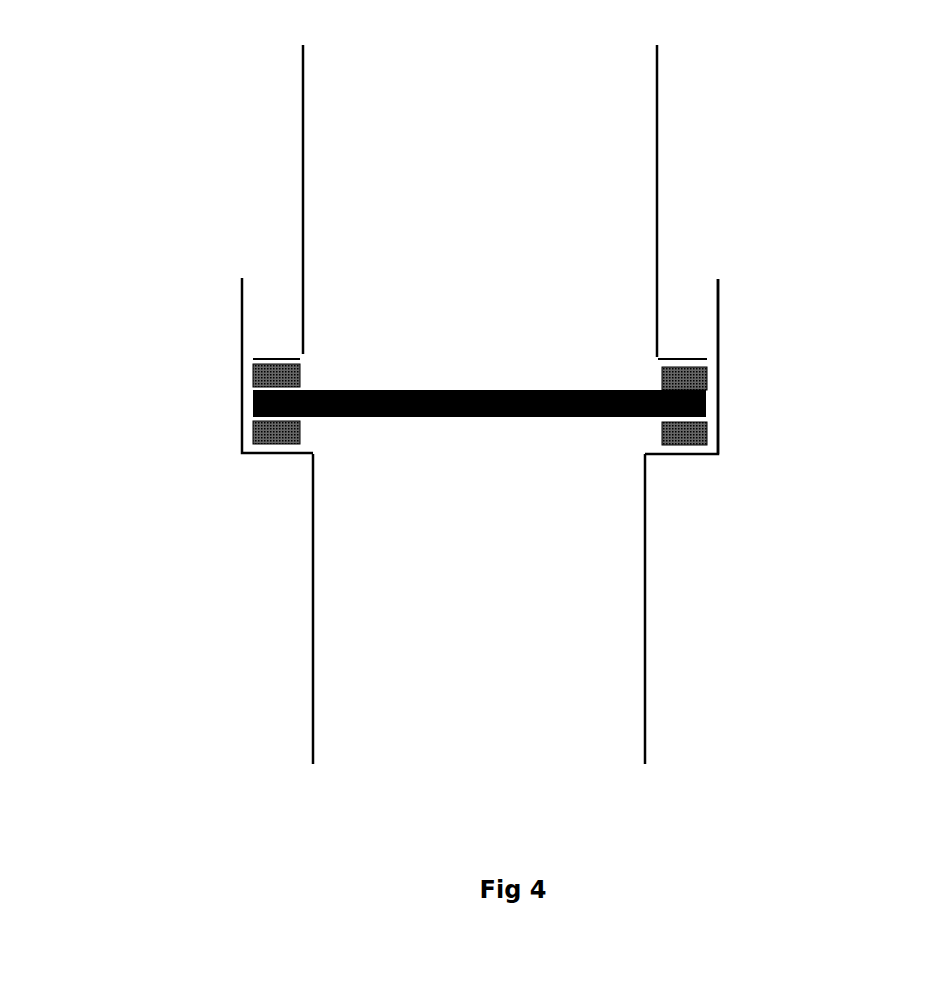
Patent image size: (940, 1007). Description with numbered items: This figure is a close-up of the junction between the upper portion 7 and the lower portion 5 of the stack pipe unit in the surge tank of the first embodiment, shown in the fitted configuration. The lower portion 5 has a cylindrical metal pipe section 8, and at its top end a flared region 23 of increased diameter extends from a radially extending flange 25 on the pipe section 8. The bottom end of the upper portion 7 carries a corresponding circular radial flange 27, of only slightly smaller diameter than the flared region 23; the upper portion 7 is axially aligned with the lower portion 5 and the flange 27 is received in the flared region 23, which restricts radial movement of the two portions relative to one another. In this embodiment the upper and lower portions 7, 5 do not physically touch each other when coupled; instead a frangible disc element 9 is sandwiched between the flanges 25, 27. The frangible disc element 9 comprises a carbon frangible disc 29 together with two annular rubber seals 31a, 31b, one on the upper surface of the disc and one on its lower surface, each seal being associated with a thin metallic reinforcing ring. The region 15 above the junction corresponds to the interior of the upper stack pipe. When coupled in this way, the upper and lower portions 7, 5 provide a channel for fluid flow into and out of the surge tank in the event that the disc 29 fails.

The upper portion 7 is at (298, 96).
The upper flow region 15 is at (560, 151).
The lower portion 5 is at (308, 621).
The pipe section 8 is at (492, 585).
The flared region 23 is at (220, 314).
The carbon frangible disc 29 is at (402, 388).
The radial flange 27 is at (270, 348).
The radially extending flange 25 is at (269, 453).
The annular rubber seal 31a is at (708, 368).
The annular rubber seal 31b is at (684, 452).
The frangible disc element 9 is at (721, 435).